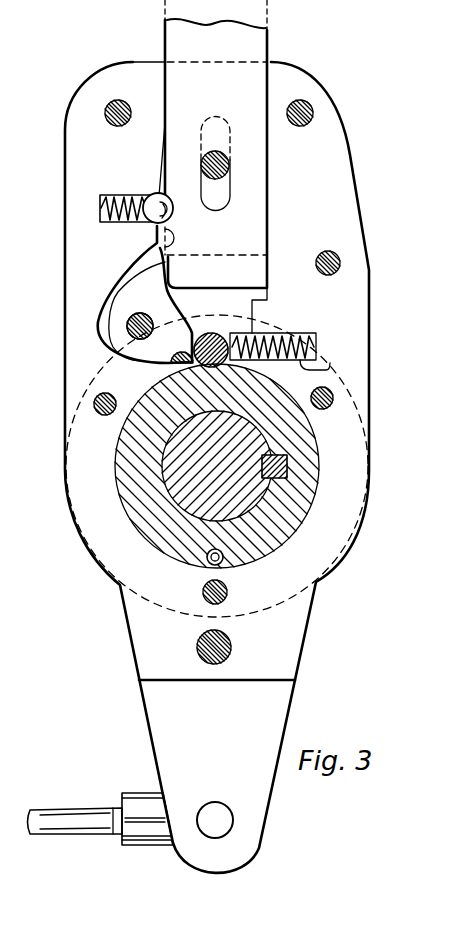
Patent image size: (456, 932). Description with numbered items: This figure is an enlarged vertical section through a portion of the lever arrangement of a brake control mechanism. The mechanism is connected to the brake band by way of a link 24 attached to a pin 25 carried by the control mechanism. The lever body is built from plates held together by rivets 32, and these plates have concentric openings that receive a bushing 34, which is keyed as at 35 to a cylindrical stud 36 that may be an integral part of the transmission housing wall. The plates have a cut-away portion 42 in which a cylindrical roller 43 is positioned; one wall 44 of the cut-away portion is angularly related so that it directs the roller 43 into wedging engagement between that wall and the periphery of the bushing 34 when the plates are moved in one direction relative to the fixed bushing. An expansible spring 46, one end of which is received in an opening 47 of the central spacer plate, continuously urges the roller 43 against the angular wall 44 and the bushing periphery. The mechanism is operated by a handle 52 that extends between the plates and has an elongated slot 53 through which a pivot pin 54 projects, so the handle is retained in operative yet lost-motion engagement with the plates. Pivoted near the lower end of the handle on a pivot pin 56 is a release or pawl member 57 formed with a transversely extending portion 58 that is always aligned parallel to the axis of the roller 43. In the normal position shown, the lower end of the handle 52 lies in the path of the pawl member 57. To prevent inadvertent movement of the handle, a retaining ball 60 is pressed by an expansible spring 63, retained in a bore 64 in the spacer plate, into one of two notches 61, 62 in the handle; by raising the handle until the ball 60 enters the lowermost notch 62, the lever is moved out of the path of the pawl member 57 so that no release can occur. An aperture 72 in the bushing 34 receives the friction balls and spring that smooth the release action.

The link 24 is at (75, 833).
The pin 25 is at (223, 828).
The rivets 32 is at (106, 113).
The bushing 34 is at (310, 480).
The key 35 is at (287, 458).
The stud 36 is at (173, 483).
The cut-away portion 42 is at (248, 330).
The roller 43 is at (228, 335).
The wall 44 is at (228, 330).
The expansible spring 46 is at (316, 335).
The opening 47 is at (320, 366).
The handle 52 is at (268, 31).
The elongated slot 53 is at (230, 187).
The pivot pin 54 is at (228, 153).
The pivot pin 56 is at (127, 325).
The pawl member 57 is at (140, 282).
The transversely extending portion 58 is at (165, 363).
The retaining ball 60 is at (157, 196).
The notch 61 is at (173, 213).
The notch 62 is at (176, 242).
The expansible spring 63 is at (122, 197).
The bore 64 is at (100, 200).
The aperture 72 is at (207, 562).